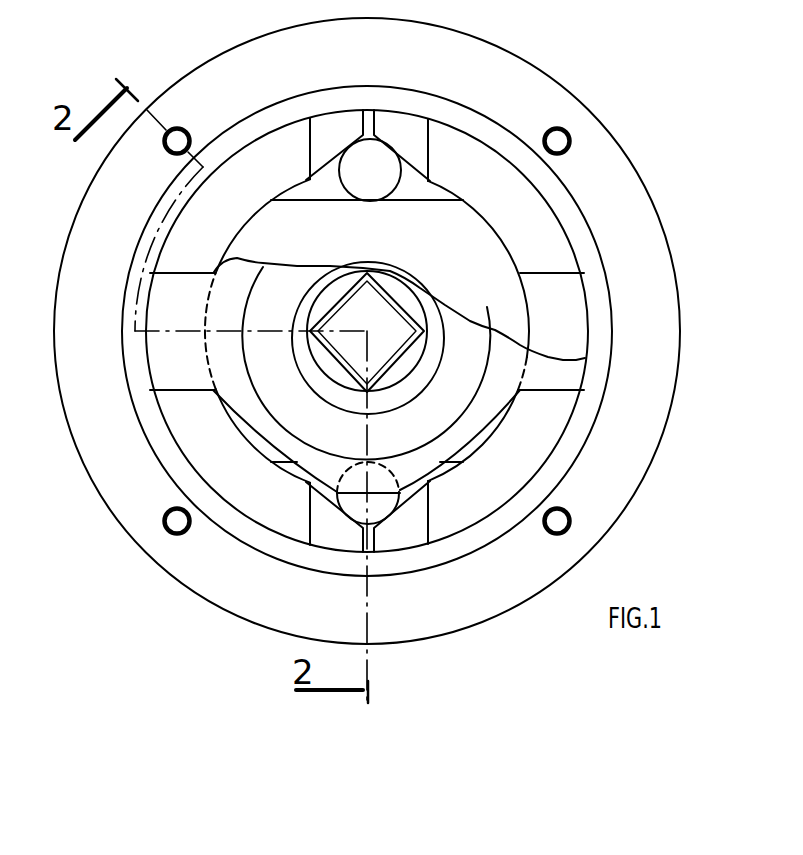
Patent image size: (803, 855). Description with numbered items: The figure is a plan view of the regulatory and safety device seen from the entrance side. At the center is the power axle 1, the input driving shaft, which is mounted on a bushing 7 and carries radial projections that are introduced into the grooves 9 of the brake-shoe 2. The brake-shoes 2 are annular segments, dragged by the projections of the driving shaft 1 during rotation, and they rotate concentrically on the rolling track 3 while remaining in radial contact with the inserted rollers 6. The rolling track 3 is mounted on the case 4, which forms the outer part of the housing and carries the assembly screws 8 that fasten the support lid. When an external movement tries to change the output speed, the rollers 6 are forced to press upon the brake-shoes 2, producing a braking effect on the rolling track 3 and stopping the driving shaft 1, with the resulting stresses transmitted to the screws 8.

The power axle 1 is at (477, 413).
The brake-shoe 2 is at (533, 207).
The rolling track 3 is at (603, 333).
The case 4 is at (585, 535).
The rollers 6 is at (372, 163).
The bushings 7 is at (430, 365).
The assembly screws 8 is at (573, 516).
The brake-shoe groove 9 is at (567, 322).